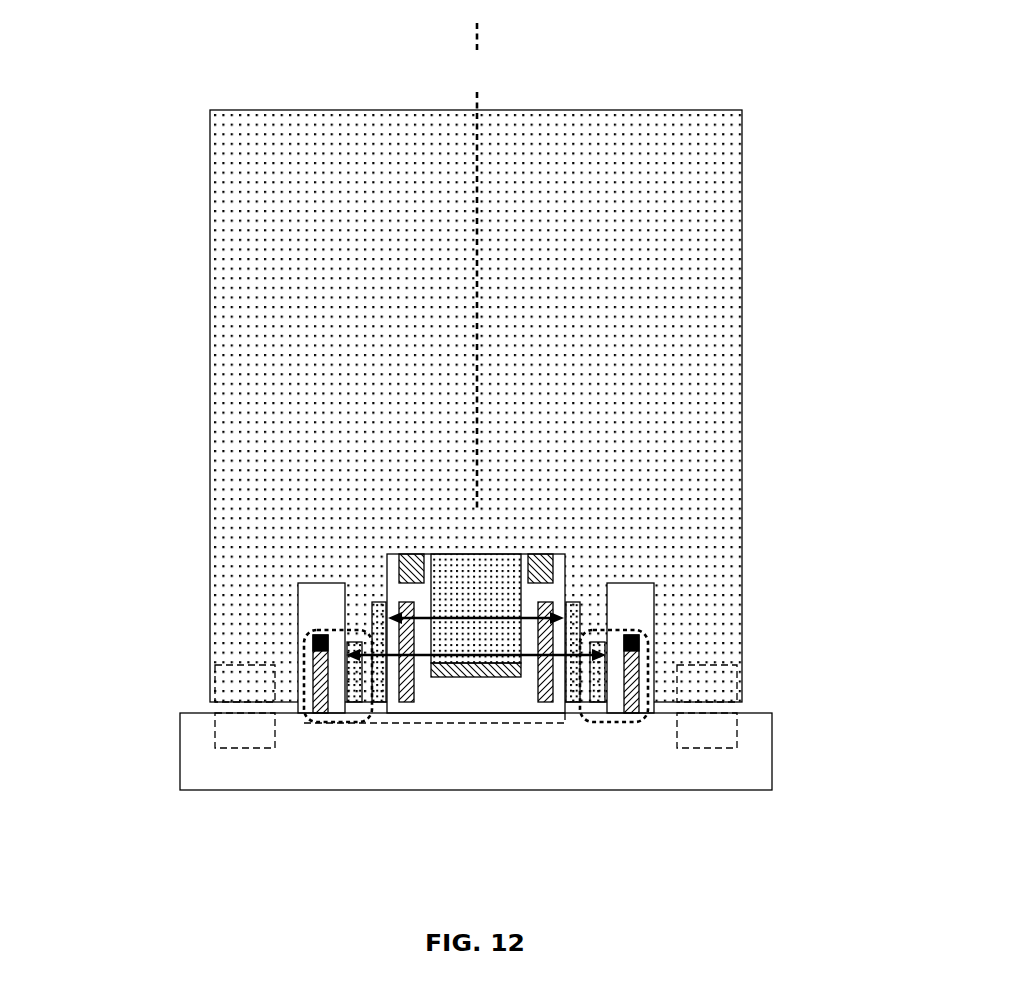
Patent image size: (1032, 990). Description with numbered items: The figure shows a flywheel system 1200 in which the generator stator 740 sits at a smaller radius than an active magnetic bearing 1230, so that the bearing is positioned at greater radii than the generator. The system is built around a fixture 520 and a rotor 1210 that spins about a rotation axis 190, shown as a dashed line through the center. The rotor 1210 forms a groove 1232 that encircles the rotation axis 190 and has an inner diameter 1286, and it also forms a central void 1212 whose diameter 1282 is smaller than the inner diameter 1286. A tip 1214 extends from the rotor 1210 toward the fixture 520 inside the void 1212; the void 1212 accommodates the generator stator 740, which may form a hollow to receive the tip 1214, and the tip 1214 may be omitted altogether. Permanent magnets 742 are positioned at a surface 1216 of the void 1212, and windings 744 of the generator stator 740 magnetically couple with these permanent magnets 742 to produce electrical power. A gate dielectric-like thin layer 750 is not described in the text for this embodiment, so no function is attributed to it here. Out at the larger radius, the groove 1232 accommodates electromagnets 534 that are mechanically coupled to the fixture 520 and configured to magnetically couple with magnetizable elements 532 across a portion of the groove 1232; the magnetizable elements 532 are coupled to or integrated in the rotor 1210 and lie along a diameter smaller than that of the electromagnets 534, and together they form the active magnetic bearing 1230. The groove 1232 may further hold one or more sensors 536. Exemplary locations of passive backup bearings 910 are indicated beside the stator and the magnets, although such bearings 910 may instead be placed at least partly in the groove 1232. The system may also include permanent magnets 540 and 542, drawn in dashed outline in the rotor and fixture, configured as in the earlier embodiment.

The flywheel system 1200 is at (108, 77).
The rotation axis 190 is at (477, 267).
The rotor 1210 is at (262, 144).
The tip 1214 is at (498, 585).
The passive backup bearings 910 is at (398, 565).
The permanent magnets 742 is at (372, 608).
The windings 744 is at (398, 633).
The generator stator 740 is at (493, 710).
The gate dielectric layer 750 is at (465, 725).
The sensor 536 is at (312, 647).
The electromagnets 534 is at (304, 707).
The magnetizable elements 532 is at (337, 716).
The permanent magnets 540 is at (262, 696).
The permanent magnets 542 is at (262, 746).
The fixture 520 is at (762, 779).
The active magnetic bearing 1230 is at (310, 723).
The groove 1232 is at (345, 705).
The central void 1212 is at (390, 710).
The surface 1216 is at (406, 674).
The diameter 1282 is at (503, 615).
The inner diameter 1286 is at (527, 657).